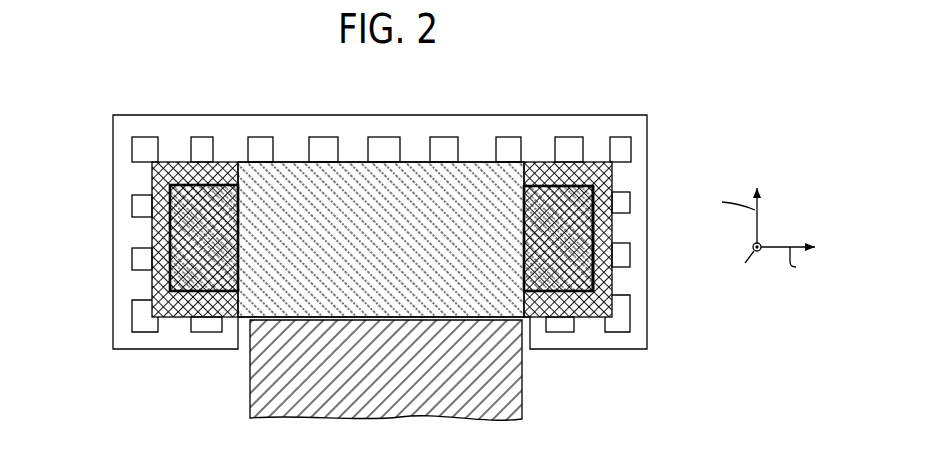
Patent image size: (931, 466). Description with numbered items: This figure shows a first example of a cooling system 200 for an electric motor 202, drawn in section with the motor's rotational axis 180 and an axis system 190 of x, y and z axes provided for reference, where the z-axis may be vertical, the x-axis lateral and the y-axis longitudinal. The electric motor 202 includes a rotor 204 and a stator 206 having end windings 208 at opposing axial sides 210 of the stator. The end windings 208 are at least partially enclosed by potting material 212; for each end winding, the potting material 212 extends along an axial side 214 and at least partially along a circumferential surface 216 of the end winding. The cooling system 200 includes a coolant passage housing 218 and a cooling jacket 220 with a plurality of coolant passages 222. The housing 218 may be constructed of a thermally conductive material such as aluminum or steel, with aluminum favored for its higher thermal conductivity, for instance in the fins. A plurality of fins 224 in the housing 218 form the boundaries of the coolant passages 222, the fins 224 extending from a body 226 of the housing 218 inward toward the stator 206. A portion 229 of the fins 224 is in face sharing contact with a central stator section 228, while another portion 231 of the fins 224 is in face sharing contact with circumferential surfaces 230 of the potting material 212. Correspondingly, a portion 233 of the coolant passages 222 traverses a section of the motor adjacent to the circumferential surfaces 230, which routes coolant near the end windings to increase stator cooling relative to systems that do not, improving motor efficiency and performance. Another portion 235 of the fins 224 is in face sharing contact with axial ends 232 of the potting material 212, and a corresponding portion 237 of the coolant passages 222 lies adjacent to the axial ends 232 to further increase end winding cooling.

The rotational axis 180 is at (364, 463).
The axis system 190 is at (790, 201).
The cooling system 200 is at (690, 120).
The electric motor 202 is at (744, 81).
The rotor 204 is at (362, 376).
The stator 206 is at (386, 160).
The end windings 208 is at (187, 244).
The axial sides 210 is at (144, 205).
The potting material 212 is at (207, 307).
The axial side 214 is at (600, 228).
The circumferential surface 216 is at (562, 181).
The coolant passage housing 218 is at (542, 90).
The cooling jacket 220 is at (446, 135).
The coolant passages 222 is at (262, 150).
The fins 224 is at (347, 147).
The body 226 is at (252, 128).
The central stator section 228 is at (362, 244).
The portion of the fins 229 is at (499, 145).
The circumferential surfaces 230 is at (597, 162).
The portion of the fins 231 is at (146, 147).
The axial ends 232 is at (152, 275).
The portion of the coolant passages 233 is at (200, 143).
The portion of the fins 235 is at (142, 304).
The portion of the coolant passages 237 is at (132, 260).